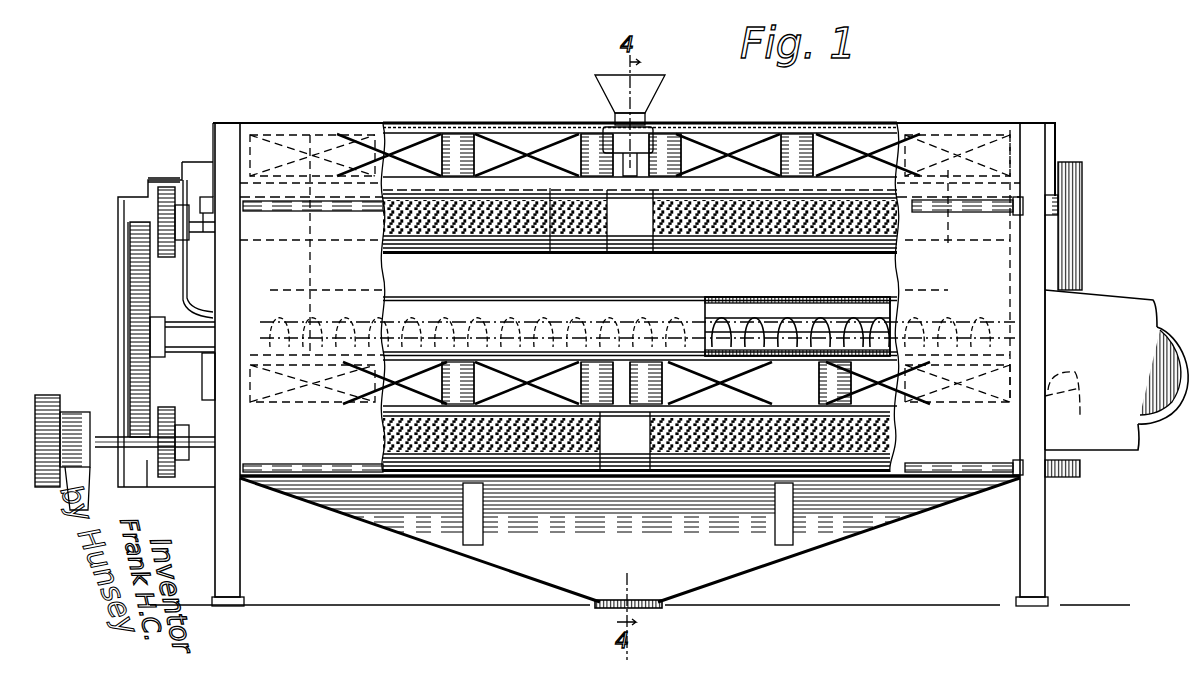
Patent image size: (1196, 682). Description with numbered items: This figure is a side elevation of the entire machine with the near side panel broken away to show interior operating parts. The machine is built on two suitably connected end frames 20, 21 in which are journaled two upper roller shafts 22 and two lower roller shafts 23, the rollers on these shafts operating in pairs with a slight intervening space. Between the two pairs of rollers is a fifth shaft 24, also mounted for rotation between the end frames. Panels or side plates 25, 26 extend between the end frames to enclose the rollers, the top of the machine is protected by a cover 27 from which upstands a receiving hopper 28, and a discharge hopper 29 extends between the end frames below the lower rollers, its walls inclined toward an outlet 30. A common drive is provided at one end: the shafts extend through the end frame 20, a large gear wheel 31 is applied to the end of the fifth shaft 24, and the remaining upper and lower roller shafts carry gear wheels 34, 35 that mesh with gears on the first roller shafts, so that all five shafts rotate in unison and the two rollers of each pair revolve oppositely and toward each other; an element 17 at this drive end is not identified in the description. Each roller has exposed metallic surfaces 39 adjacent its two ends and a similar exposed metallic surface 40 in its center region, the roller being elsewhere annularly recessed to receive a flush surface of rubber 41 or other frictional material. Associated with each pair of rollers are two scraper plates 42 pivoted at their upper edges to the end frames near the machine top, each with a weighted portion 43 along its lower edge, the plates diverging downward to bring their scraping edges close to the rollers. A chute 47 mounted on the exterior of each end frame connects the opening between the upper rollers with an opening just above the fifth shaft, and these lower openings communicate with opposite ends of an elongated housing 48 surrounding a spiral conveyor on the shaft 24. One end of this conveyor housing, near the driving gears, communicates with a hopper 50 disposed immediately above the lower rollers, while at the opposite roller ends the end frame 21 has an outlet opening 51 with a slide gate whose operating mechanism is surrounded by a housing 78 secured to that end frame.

The bearing bracket 17 is at (187, 162).
The end frame 20 is at (241, 560).
The end frame 21 is at (1020, 553).
The upper roller shafts 22 is at (215, 233).
The lower roller shafts 23 is at (110, 455).
The fifth shaft 24 is at (742, 330).
The side plate 25 is at (865, 309).
The side plate 26 is at (625, 265).
The cover 27 is at (468, 122).
The receiving hopper 28 is at (596, 87).
The discharge hopper 29 is at (760, 568).
The outlet 30 is at (650, 607).
The large gear wheel 31 is at (135, 278).
The gear wheel 34 is at (160, 192).
The gear wheel 35 is at (170, 478).
The exposed metallic surfaces 39 is at (305, 252).
The exposed metallic surface 40 is at (625, 246).
The surface of rubber 41 is at (440, 243).
The scraper plates 42 is at (770, 143).
The weighted portion 43 is at (550, 192).
The chute 47 is at (1084, 248).
The elongated housing 48 is at (651, 297).
The hopper 50 is at (250, 380).
The outlet opening 51 is at (1040, 417).
The housing 78 is at (1150, 304).